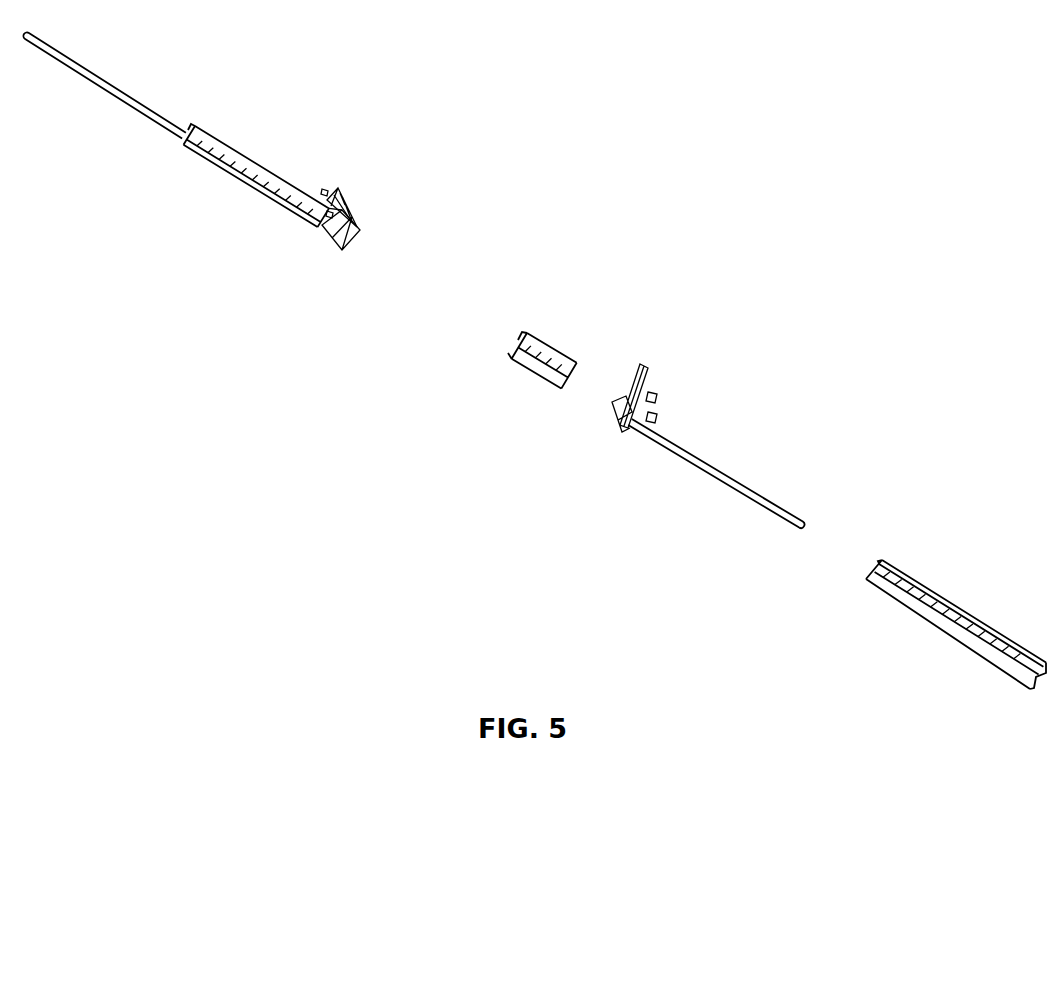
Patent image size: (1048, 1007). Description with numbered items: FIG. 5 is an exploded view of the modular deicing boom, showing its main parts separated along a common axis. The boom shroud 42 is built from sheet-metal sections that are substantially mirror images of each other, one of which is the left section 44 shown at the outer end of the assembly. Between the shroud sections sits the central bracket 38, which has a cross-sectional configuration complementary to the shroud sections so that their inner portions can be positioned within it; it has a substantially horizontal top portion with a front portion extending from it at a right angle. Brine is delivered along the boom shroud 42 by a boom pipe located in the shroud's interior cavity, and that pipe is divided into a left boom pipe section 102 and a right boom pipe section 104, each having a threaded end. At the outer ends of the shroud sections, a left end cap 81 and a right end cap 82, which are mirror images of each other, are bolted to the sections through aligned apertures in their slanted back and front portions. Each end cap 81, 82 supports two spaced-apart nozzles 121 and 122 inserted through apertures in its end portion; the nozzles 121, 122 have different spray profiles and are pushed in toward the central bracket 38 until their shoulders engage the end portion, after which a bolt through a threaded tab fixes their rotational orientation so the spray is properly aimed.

The left boom pipe section 102 is at (133, 110).
The boom shroud 42 is at (225, 180).
The left end cap 81 is at (355, 222).
The nozzle 121 is at (345, 187).
The nozzle 122 is at (325, 232).
The central bracket 38 is at (557, 348).
The right end cap 82 is at (641, 372).
The right boom pipe section 104 is at (718, 480).
The left section 44 is at (936, 626).